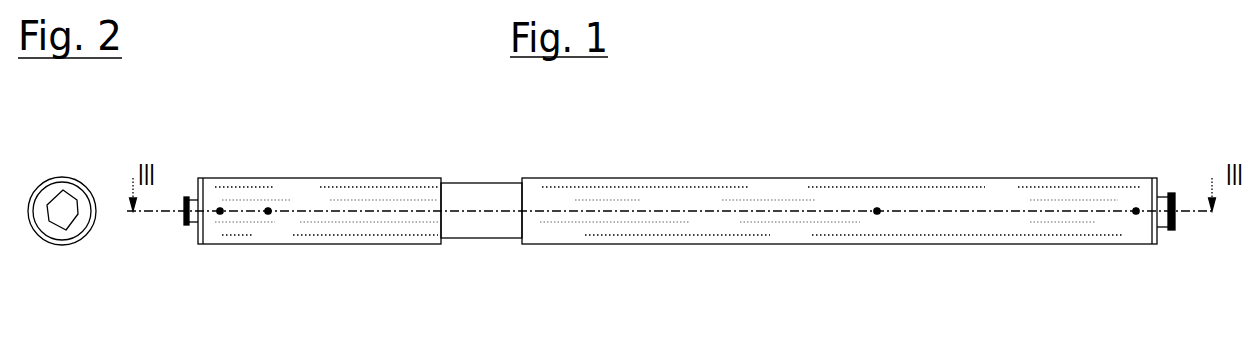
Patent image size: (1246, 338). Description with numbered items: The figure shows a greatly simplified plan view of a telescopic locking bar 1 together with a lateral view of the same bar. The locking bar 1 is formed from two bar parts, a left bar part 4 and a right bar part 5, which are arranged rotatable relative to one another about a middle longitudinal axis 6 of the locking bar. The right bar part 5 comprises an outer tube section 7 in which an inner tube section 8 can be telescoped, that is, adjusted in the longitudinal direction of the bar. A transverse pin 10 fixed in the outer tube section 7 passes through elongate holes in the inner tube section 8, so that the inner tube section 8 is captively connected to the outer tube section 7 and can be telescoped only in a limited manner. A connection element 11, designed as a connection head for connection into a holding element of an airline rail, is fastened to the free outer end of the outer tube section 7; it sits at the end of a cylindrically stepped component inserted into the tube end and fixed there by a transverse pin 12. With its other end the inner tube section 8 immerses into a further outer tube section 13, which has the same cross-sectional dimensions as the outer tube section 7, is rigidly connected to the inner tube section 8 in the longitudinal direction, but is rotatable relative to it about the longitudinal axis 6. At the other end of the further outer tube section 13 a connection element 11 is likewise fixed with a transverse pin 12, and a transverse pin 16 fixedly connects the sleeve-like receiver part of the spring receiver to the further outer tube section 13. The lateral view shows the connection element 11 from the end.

In FIG. 1, the telescopic locking bar 1 is at (679, 166).
In FIG. 1, the left bar part 4 is at (369, 135).
In FIG. 1, the right bar part 5 is at (839, 160).
In FIG. 1, the middle longitudinal axis 6 is at (571, 212).
In FIG. 1, the outer tube section 7 is at (677, 166).
In FIG. 1, the inner tube section 8 is at (498, 170).
In FIG. 1, the transverse pin 10 is at (876, 214).
In FIG. 2, the connection element 11 is at (63, 212).
In FIG. 1, the connection element 11 is at (191, 188).
In FIG. 1, the transverse pin 12 is at (220, 214).
In FIG. 1, the further outer tube section 13 is at (293, 168).
In FIG. 1, the transverse pin 16 is at (268, 214).